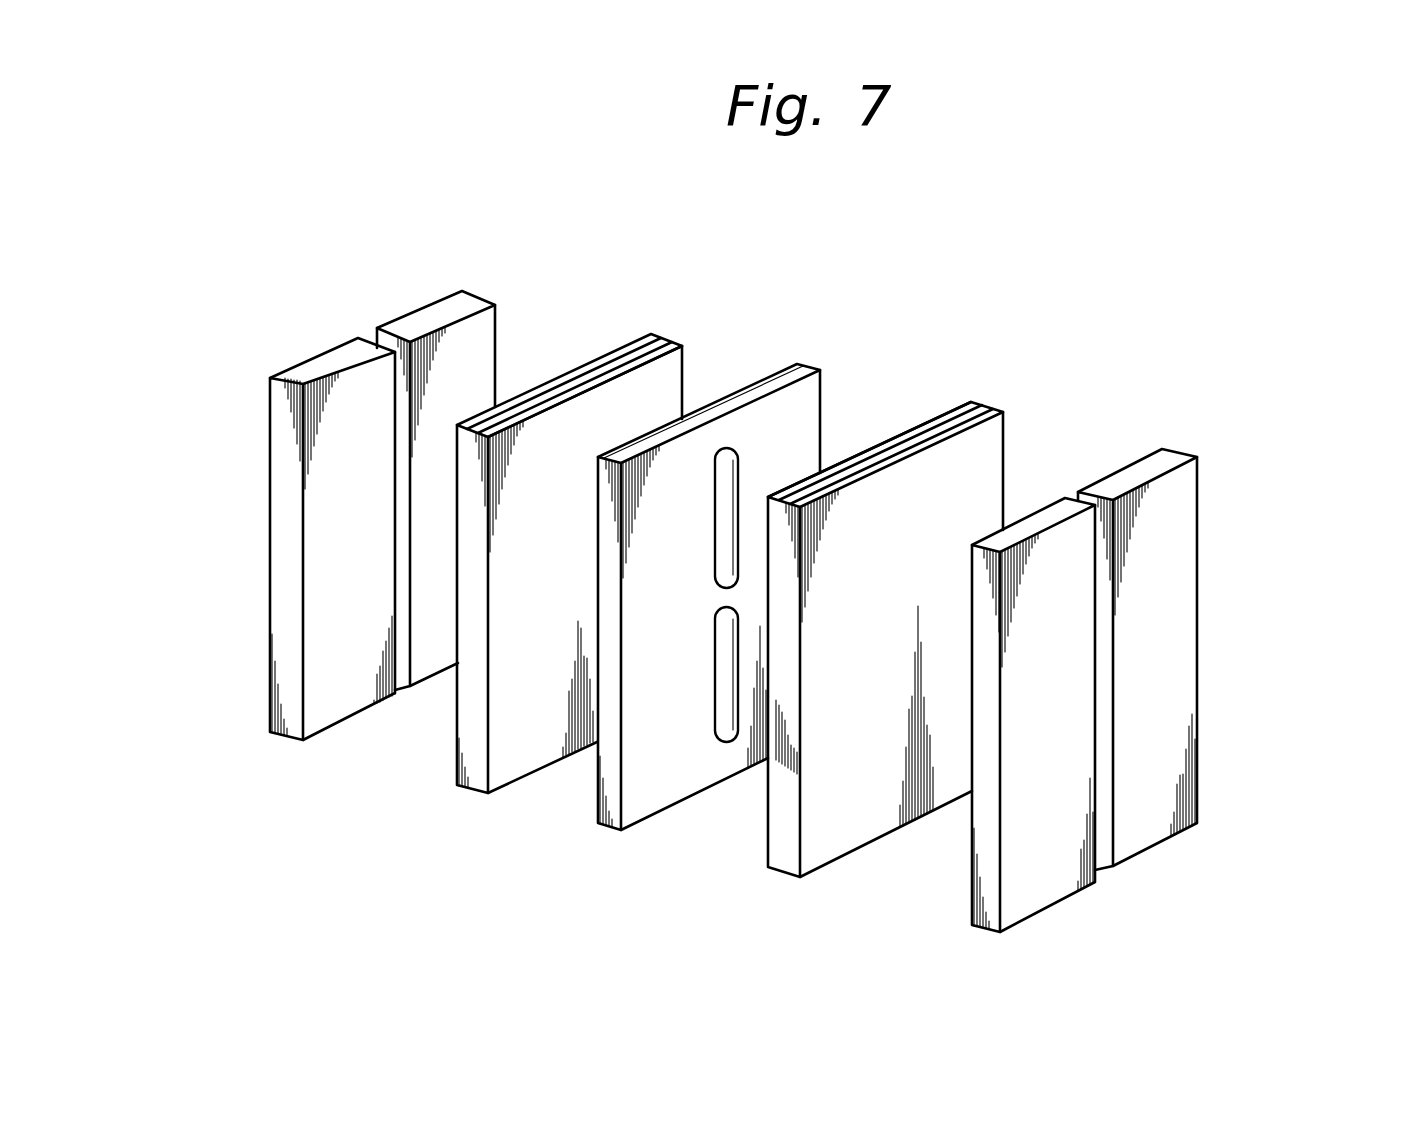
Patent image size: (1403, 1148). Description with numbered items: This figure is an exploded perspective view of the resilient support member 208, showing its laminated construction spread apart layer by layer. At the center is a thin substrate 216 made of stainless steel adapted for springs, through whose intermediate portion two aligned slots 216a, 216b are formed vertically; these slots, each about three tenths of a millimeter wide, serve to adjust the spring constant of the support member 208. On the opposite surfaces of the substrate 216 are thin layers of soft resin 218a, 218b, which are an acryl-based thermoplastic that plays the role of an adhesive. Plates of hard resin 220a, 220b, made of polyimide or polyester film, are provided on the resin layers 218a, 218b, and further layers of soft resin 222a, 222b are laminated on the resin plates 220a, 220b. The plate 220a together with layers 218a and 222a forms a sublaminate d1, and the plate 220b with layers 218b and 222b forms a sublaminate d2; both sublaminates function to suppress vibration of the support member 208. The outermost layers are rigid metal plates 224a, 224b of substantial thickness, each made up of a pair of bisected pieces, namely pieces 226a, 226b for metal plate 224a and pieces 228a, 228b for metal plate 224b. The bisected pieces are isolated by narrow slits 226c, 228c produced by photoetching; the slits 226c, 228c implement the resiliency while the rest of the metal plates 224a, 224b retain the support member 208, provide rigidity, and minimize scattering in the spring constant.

The support member 208 is at (1103, 272).
The substrate 216 is at (797, 366).
The slot 216a is at (723, 510).
The slot 216b is at (723, 665).
The layer of soft resin 218a is at (684, 344).
The layer of soft resin 218b is at (980, 400).
The plate of hard resin 220a is at (671, 339).
The plate of hard resin 220b is at (996, 403).
The layer of soft resin 222a is at (652, 335).
The layer of soft resin 222b is at (1007, 409).
The metal plate 224a is at (475, 290).
The metal plate 224b is at (1195, 440).
The bisected piece 226a is at (341, 708).
The bisected piece 226b is at (431, 665).
The slit 226c is at (397, 462).
The bisected piece 228a is at (1050, 877).
The bisected piece 228b is at (1151, 828).
The slit 228c is at (1105, 680).
The sublaminate d1 is at (718, 248).
The sublaminate d2 is at (1017, 323).